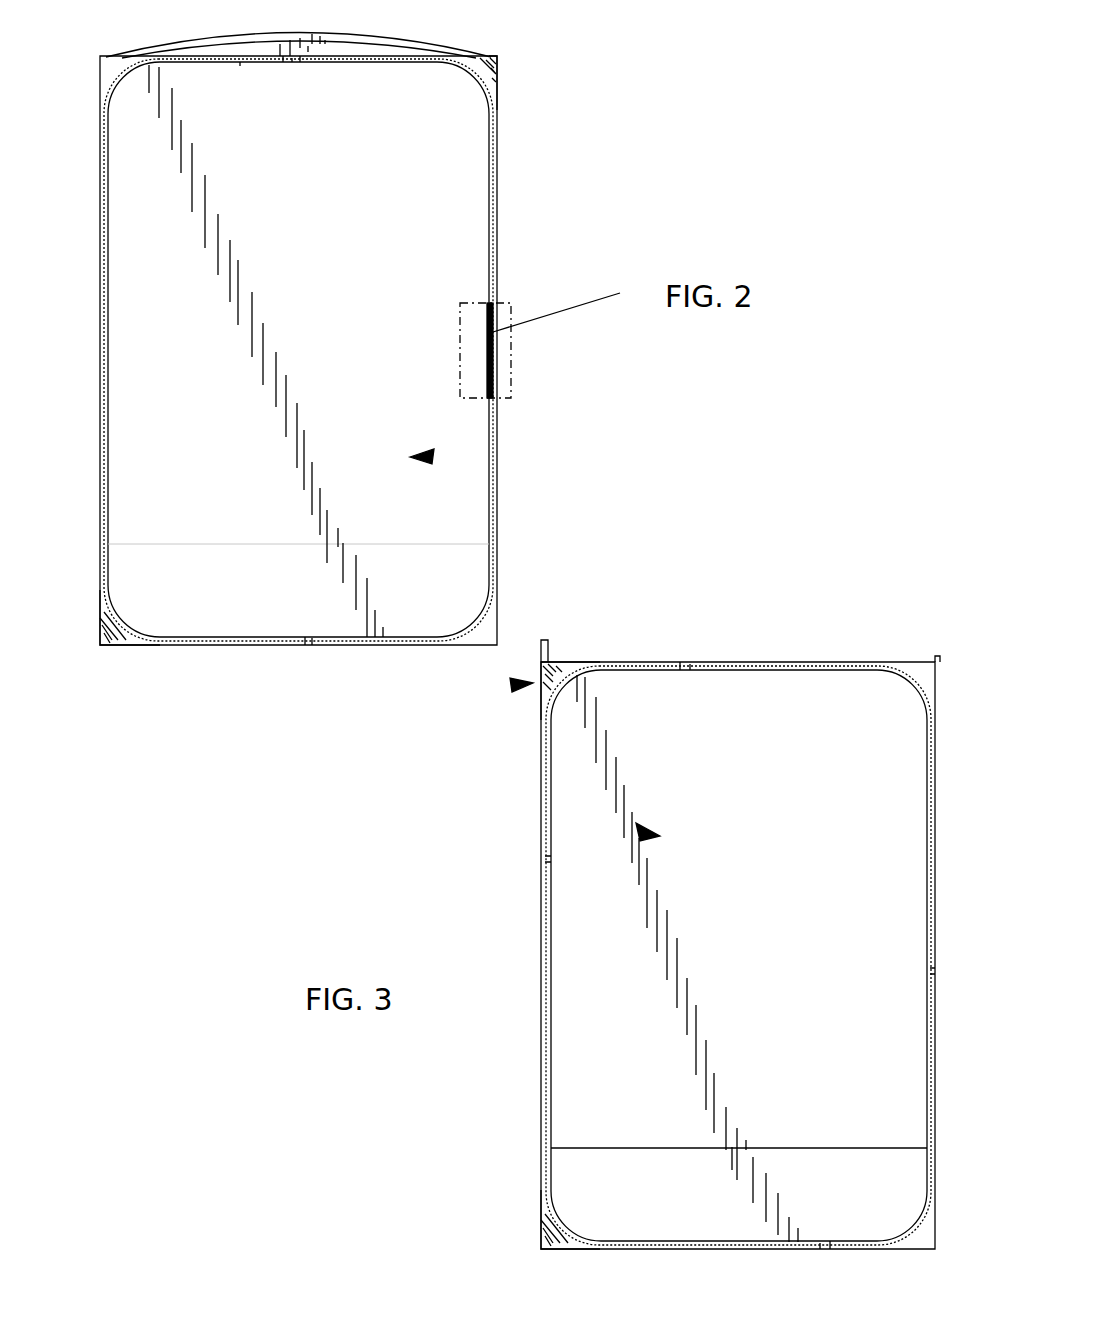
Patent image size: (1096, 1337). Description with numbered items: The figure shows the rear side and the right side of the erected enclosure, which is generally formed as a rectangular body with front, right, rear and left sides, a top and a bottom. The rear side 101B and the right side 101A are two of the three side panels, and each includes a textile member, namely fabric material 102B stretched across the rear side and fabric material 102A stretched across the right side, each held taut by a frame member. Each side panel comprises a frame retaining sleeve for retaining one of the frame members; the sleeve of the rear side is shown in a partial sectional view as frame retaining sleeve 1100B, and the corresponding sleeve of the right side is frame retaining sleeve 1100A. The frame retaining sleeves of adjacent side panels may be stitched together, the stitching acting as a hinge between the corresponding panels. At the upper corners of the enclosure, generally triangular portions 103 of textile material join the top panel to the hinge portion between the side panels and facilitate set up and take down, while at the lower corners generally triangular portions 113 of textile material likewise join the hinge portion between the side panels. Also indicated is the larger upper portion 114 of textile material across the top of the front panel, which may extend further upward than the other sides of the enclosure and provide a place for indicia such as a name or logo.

In FIG. 2, the generally triangular portions of textile material 103 is at (497, 72).
In FIG. 3, the generally triangular portions of textile material 103 is at (558, 666).
In FIG. 2, the frame retaining sleeve 1100B is at (497, 244).
In FIG. 3, the frame retaining sleeve 1100A is at (625, 668).
In FIG. 2, the textile member 102B is at (195, 407).
In FIG. 3, the textile member 102A is at (605, 897).
In FIG. 2, the rear side 101B is at (430, 455).
In FIG. 3, the right side 101A is at (645, 832).
In FIG. 2, the generally triangular portions of textile material 113 is at (108, 645).
In FIG. 3, the generally triangular portions of textile material 113 is at (550, 1230).
In FIG. 2, the upper portion 114 is at (515, 685).